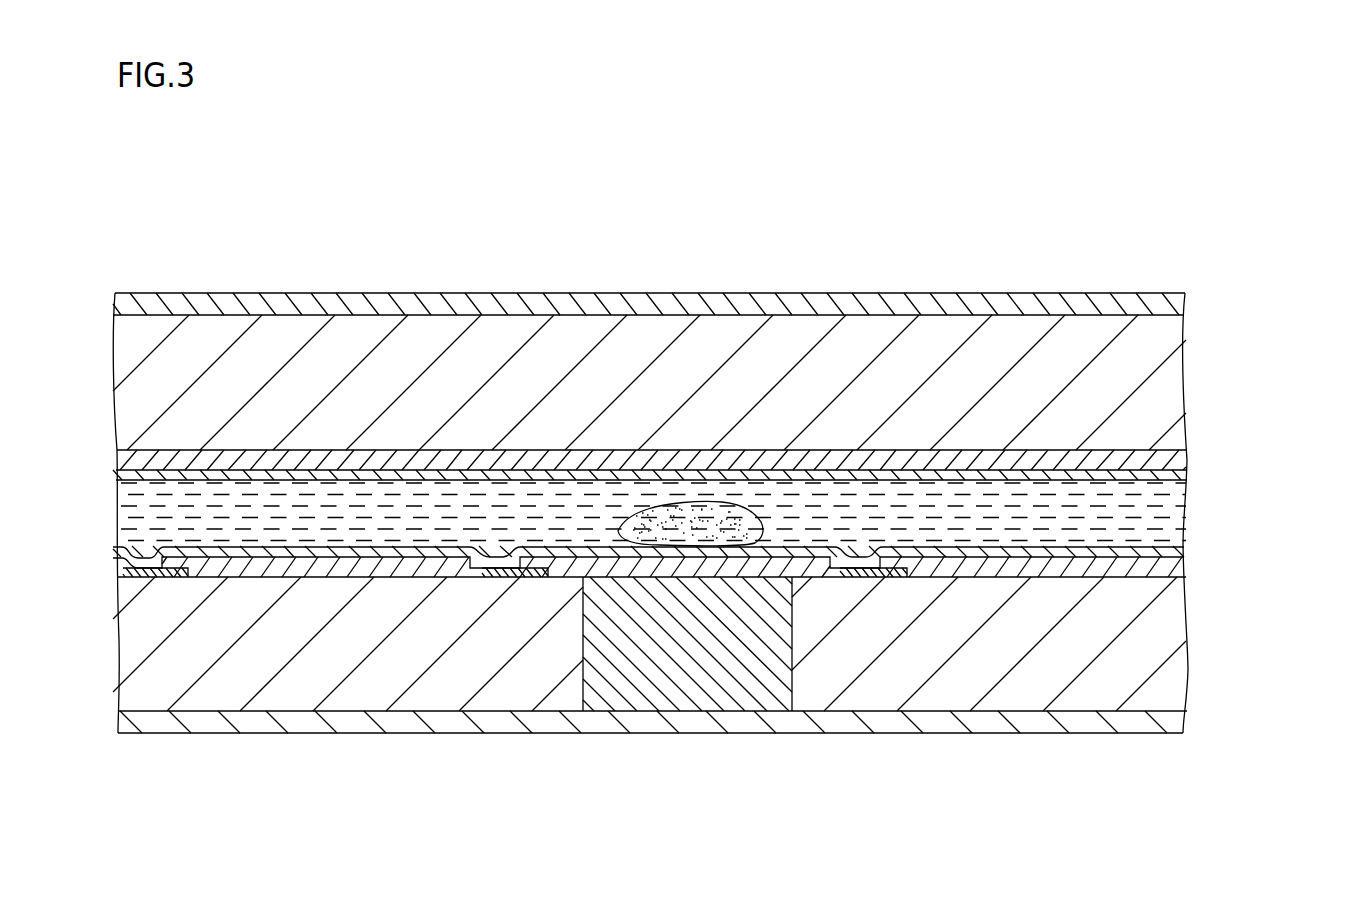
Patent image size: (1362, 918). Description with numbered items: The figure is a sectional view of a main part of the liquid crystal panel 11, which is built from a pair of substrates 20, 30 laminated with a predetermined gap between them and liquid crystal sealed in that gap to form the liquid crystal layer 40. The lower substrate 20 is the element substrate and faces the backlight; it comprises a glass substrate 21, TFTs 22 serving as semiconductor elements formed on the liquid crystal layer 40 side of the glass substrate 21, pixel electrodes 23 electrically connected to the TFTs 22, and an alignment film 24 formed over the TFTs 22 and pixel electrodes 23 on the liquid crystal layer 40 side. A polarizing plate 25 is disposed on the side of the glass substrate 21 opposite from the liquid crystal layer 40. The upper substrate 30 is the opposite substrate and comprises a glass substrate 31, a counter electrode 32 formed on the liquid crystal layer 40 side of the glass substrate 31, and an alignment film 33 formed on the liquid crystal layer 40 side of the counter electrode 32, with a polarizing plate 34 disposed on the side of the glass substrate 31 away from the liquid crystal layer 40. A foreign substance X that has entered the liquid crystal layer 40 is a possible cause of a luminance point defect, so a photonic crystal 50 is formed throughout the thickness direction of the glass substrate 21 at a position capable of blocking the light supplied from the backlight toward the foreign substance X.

The liquid crystal panel 11 is at (1106, 262).
The substrate 20 is at (719, 667).
The glass substrate 21 is at (1163, 674).
The TFT 22 is at (873, 577).
The pixel electrode 23 is at (1093, 567).
The alignment film 24 is at (1158, 552).
The polarizing plate 25 is at (694, 717).
The substrate 30 is at (719, 397).
The glass substrate 31 is at (1158, 361).
The counter electrode 32 is at (1168, 462).
The alignment film 33 is at (692, 460).
The polarizing plate 34 is at (1167, 305).
The liquid crystal layer 40 is at (1150, 522).
The photonic crystal 50 is at (758, 677).
The foreign substance X is at (643, 524).